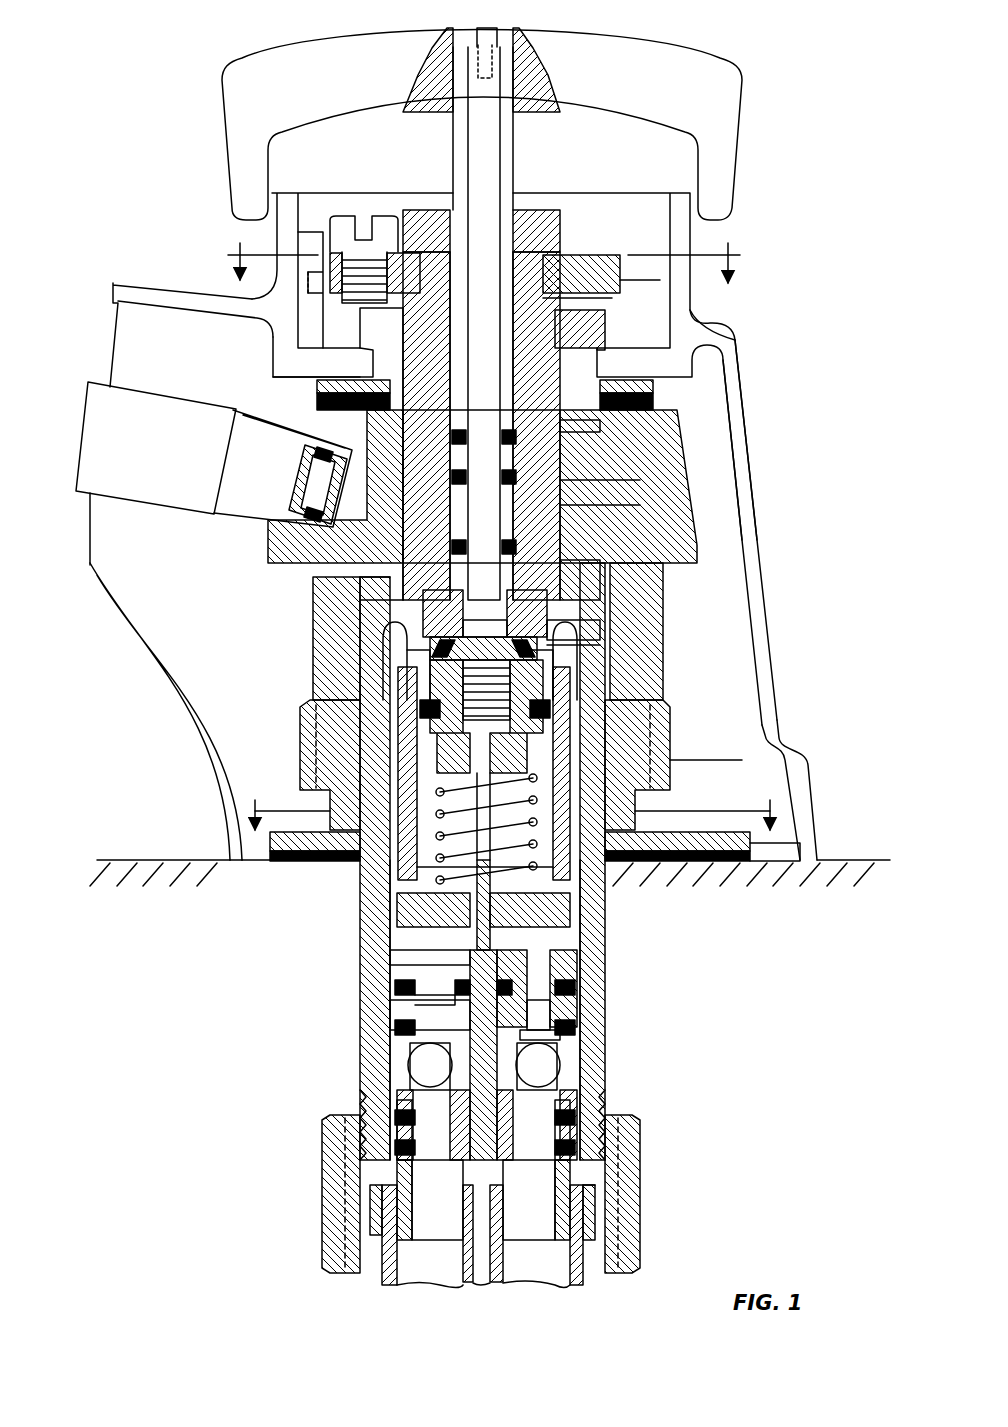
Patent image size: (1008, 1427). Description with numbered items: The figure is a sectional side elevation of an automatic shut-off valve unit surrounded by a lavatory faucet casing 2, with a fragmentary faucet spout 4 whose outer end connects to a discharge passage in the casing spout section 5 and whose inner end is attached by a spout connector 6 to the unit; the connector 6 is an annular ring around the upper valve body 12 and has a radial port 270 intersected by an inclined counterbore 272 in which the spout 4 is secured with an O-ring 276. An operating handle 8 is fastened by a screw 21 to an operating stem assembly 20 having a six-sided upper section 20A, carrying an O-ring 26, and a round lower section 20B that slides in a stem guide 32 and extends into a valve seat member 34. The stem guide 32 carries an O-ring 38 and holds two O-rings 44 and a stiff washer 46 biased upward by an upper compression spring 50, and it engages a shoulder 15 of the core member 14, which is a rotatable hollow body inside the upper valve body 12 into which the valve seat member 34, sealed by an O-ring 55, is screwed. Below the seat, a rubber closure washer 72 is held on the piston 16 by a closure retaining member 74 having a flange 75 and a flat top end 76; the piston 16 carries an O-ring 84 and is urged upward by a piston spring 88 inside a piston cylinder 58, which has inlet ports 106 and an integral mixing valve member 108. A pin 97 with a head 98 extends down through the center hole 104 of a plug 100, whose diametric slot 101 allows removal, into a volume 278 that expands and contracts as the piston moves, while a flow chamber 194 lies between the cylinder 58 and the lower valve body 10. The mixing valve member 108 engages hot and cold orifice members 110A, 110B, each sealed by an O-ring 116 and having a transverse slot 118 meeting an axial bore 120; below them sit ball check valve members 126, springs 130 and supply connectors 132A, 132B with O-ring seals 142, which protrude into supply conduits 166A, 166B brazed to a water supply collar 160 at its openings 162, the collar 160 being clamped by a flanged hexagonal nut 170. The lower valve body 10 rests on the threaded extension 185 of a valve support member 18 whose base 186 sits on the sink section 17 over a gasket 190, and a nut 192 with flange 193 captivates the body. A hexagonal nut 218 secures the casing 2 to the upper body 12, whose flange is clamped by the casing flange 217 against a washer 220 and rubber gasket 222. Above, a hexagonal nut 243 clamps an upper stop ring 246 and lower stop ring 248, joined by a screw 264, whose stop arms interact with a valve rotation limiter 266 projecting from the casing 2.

The lavatory faucet casing 2 is at (868, 760).
The faucet spout 4 is at (95, 385).
The casing spout section 5 is at (128, 283).
The spout connector 6 is at (700, 472).
The operating handle 8 is at (264, 45).
The lower valve body 10 is at (612, 1036).
The upper valve body 12 is at (330, 618).
The core member 14 is at (330, 600).
The shoulder 15 is at (487, 258).
The piston 16 is at (300, 795).
The lavatory sink section 17 is at (140, 858).
The valve support member 18 is at (800, 848).
The operating stem assembly 20 is at (522, 150).
The upper stem section 20A is at (455, 140).
The lower valve stem section 20B is at (300, 342).
The screw 21 is at (487, 28).
The O-ring 26 is at (568, 305).
The stem guide 32 is at (660, 428).
The valve seat member 34 is at (730, 612).
The O-ring 38 is at (625, 447).
The O-rings 44 is at (645, 492).
The stiff washer 46 is at (645, 512).
The upper compression spring 50 is at (380, 582).
The O-ring 55 is at (660, 608).
The piston cylinder 58 is at (375, 905).
The rubber closure washer 72 is at (400, 656).
The closure retaining member 74 is at (650, 664).
The flange 75 is at (390, 641).
The top end 76 is at (660, 592).
The O-ring 84 is at (650, 685).
The piston spring 88 is at (560, 905).
The pin 97 is at (400, 885).
The head 98 is at (390, 733).
The plug 100 is at (400, 930).
The diametric slot 101 is at (460, 865).
The center hole 104 is at (395, 950).
The inlet ports 106 is at (640, 632).
The mixing valve member 108 is at (520, 942).
The hot water orifice member 110A is at (400, 1010).
The cold water orifice member 110B is at (560, 1008).
The O-ring 116 is at (395, 985).
The transverse slot 118 is at (560, 1015).
The axial bore 120 is at (540, 955).
The ball check valve member 126 is at (395, 1030).
The springs 130 is at (565, 1060).
The hot water supply connector 132A is at (372, 1240).
The cold water supply connector 132B is at (597, 1228).
The O-ring seals 142 is at (395, 1140).
The water supply collar 160 is at (597, 1215).
The hot and cold water openings 162 is at (510, 1200).
The hot water supply conduit 166A is at (390, 1288).
The cold water supply conduit 166B is at (578, 1288).
The flanged hexagonal nut 170 is at (640, 1137).
The cylindrical extension 185 is at (620, 750).
The base 186 is at (262, 862).
The gasket 190 is at (780, 853).
The nut 192 is at (640, 650).
The flange 193 is at (680, 570).
The flow chamber 194 is at (365, 700).
The flange 217 is at (640, 360).
The hexagonal nut 218 is at (607, 338).
The washer 220 is at (660, 388).
The rubber gasket 222 is at (660, 402).
The hexagonal nut 243 is at (560, 235).
The upper stop ring 246 is at (608, 256).
The lower stop ring 248 is at (640, 283).
The screw 264 is at (380, 225).
The valve rotation limiter 266 is at (310, 250).
The radial port 270 is at (300, 542).
The inclined counterbore 272 is at (275, 435).
The O-ring 276 is at (305, 487).
The volume 278 is at (560, 880).